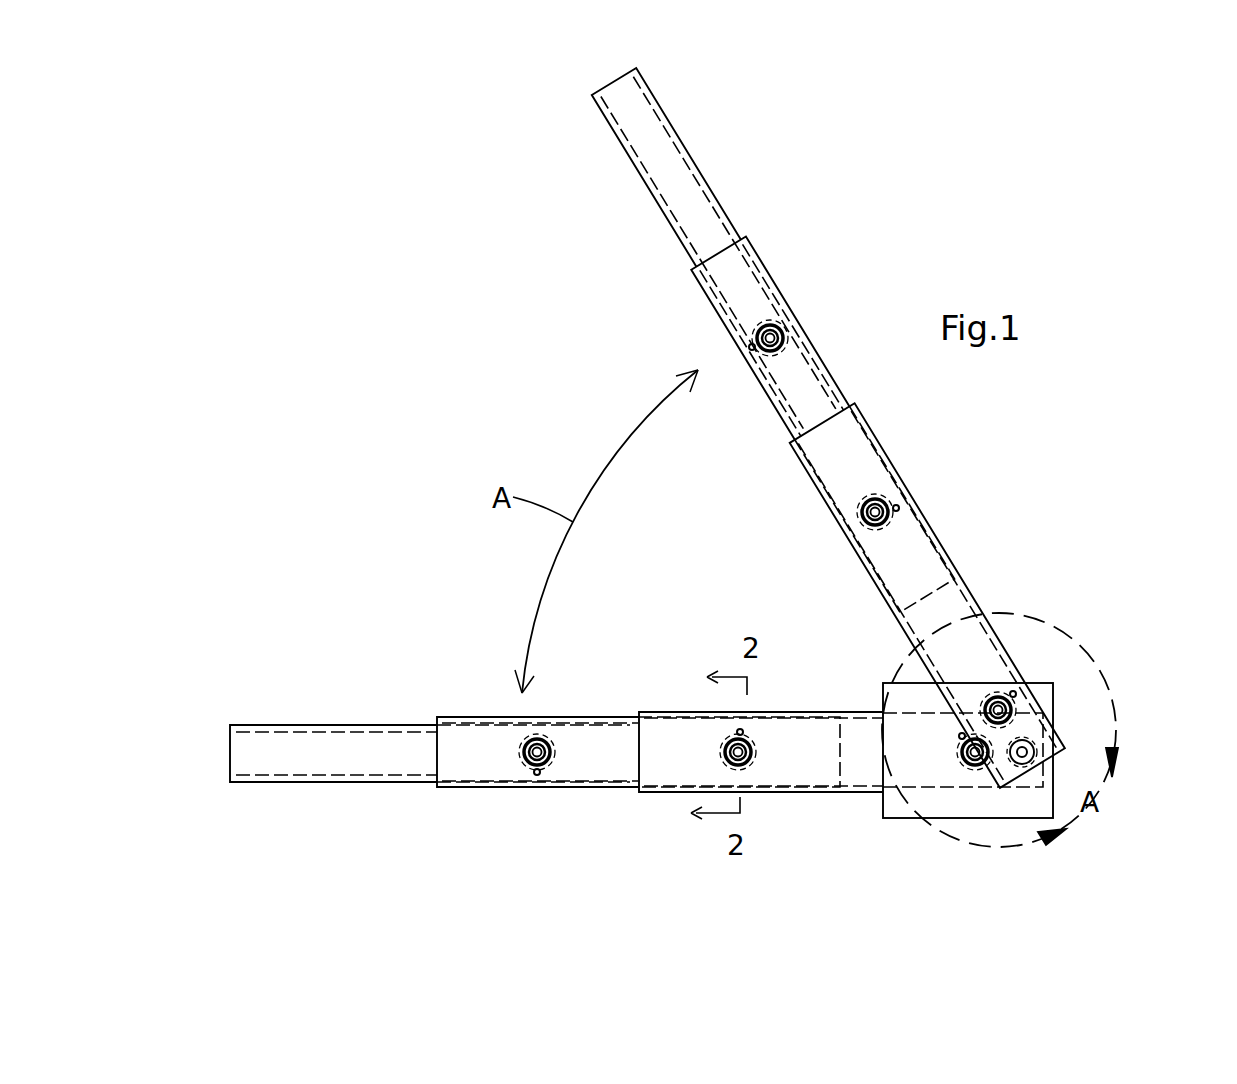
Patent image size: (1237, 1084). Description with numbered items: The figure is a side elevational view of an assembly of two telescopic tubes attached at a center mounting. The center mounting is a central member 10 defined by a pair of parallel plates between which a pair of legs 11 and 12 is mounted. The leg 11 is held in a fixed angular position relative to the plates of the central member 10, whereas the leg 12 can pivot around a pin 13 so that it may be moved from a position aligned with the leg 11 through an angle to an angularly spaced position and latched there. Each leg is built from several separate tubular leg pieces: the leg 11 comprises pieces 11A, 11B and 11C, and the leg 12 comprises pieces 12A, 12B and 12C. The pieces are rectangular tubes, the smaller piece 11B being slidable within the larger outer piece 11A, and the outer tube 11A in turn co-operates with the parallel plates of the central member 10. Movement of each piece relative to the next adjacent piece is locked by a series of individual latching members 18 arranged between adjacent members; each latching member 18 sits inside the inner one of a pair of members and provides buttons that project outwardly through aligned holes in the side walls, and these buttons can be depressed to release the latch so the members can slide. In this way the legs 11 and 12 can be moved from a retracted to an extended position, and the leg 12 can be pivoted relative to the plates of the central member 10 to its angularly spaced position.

The central member 10 is at (1047, 683).
The leg 11 is at (846, 696).
The leg piece 11A is at (855, 793).
The leg piece 11B is at (564, 788).
The leg piece 11C is at (323, 783).
The leg 12 is at (905, 453).
The leg piece 12A is at (927, 515).
The leg piece 12B is at (802, 322).
The leg piece 12C is at (687, 147).
The pin 13 is at (1033, 745).
The latching member 18 is at (790, 348).